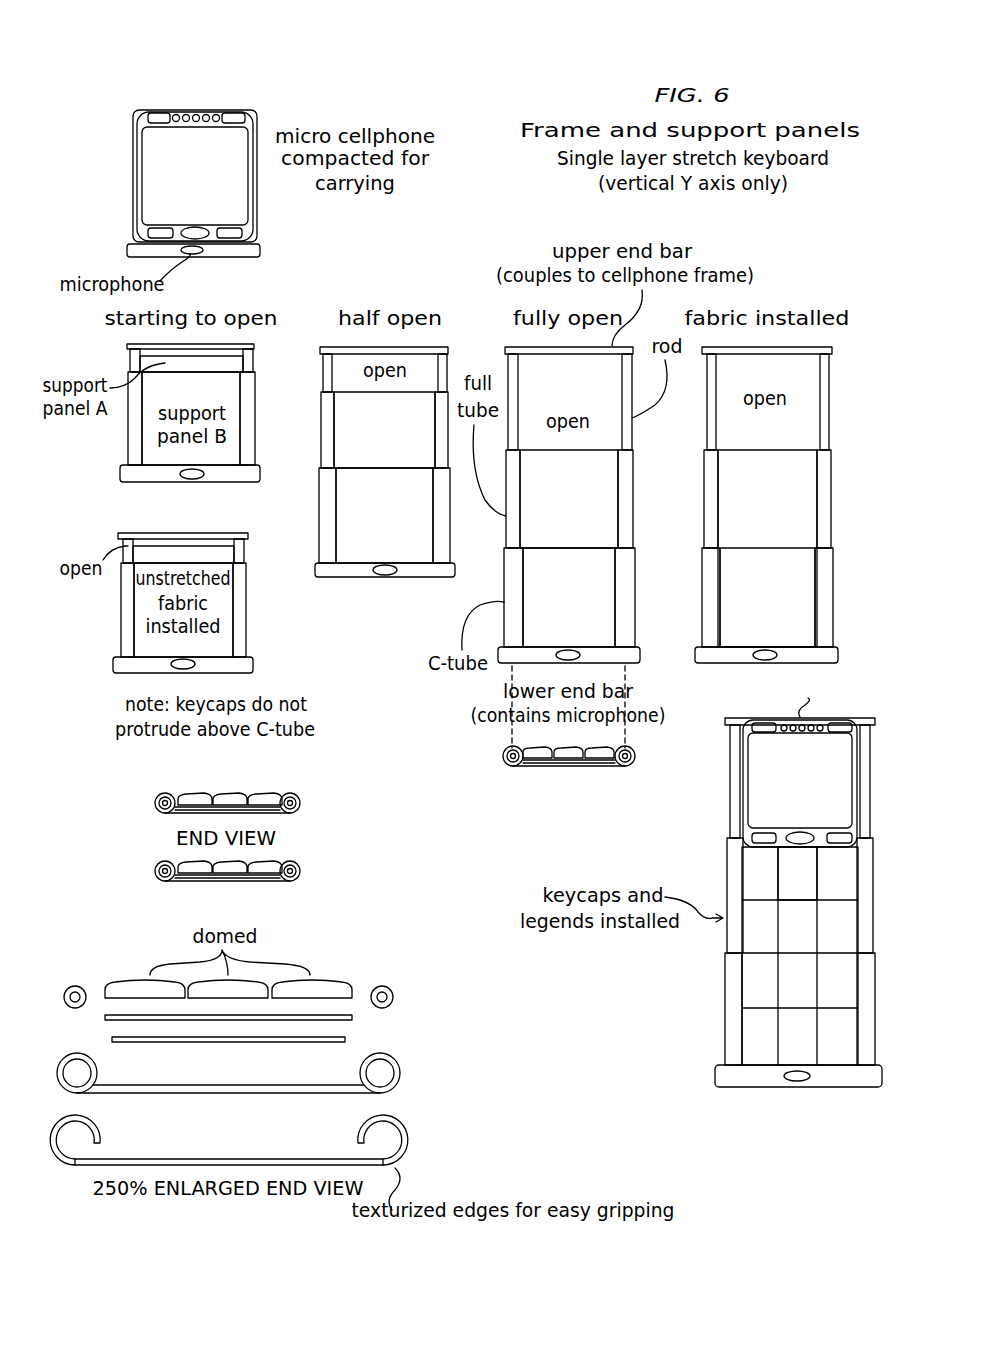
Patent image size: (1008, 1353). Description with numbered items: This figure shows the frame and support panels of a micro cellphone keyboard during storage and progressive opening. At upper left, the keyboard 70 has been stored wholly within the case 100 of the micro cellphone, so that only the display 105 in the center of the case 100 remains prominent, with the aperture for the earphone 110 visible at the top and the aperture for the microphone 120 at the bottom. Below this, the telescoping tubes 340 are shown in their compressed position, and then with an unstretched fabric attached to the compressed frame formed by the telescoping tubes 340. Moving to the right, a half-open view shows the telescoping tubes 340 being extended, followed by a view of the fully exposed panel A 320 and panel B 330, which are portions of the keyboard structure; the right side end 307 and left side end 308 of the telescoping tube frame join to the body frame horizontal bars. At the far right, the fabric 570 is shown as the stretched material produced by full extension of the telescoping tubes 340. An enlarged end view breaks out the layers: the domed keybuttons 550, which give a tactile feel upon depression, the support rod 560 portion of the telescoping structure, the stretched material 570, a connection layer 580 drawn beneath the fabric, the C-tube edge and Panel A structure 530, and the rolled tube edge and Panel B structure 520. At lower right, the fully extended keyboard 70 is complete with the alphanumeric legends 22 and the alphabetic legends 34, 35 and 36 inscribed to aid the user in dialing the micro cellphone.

The case 100 is at (272, 163).
The display 105 is at (195, 176).
The earphone 110 is at (182, 110).
The microphone 120 is at (188, 479).
The telescoping tubes 340 is at (122, 570).
The panel A 320 is at (551, 521).
The panel B 330 is at (551, 617).
The telescoping tube frame right side end 307 is at (829, 412).
The telescoping tube frame left side end 308 is at (707, 405).
The stretched material 570 is at (352, 1019).
The domed keybuttons 550 is at (228, 790).
The support rod 560 is at (395, 995).
The connection layer 580 is at (345, 1040).
The C-tube edge and Panel A structure 530 is at (400, 1078).
The rolled tube edge and Panel B structure 520 is at (408, 1145).
The alphabetic legend 34 is at (700, 836).
The alphabetic legend 35 is at (700, 836).
The alphabetic legend 36 is at (785, 858).
The alphanumeric legends 22 is at (704, 853).
The keyboard 70 is at (740, 921).